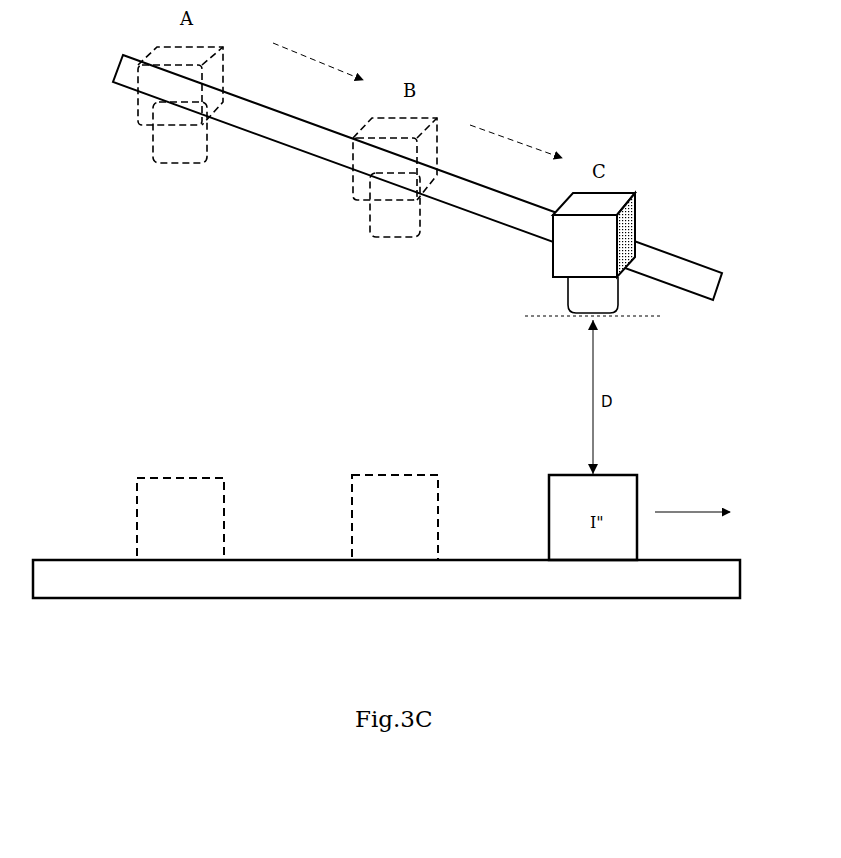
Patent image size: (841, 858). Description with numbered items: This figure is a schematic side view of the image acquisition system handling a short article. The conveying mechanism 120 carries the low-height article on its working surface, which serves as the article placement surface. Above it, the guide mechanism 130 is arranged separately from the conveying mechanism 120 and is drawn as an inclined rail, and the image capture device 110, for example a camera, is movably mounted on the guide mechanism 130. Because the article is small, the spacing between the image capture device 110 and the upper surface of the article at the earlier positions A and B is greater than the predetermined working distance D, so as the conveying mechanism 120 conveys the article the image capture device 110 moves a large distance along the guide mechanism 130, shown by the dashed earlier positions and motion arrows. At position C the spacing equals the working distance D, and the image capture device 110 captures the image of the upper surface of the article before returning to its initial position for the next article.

The image capture device 110 is at (548, 262).
The conveying mechanism 120 is at (75, 577).
The guide mechanism 130 is at (683, 270).